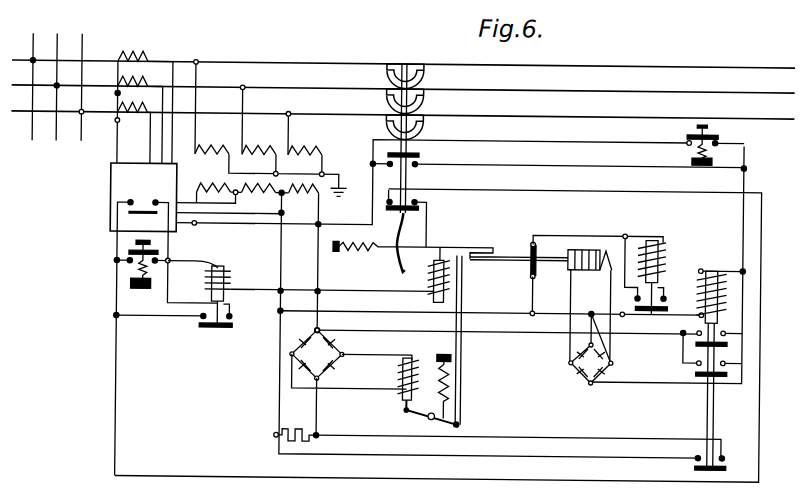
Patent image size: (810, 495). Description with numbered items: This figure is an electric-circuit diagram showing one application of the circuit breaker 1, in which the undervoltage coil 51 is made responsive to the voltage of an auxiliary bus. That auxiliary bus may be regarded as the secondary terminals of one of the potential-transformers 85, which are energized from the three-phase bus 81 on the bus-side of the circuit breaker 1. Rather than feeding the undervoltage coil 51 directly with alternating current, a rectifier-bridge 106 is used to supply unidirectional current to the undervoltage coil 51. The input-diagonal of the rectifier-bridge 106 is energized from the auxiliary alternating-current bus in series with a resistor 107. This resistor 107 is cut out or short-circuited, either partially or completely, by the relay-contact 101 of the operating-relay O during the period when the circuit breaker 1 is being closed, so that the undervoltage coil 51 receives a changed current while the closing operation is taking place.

The three-phase bus 81 is at (40, 62).
The potential-transformers 85 is at (321, 175).
The oil circuit breaker 1 is at (409, 53).
The rectifier-bridge 106 is at (292, 348).
The resistor 107 is at (303, 430).
The undervoltage coil 51 is at (399, 376).
The operating-relay O is at (720, 359).
The relay-contact 101 is at (727, 456).